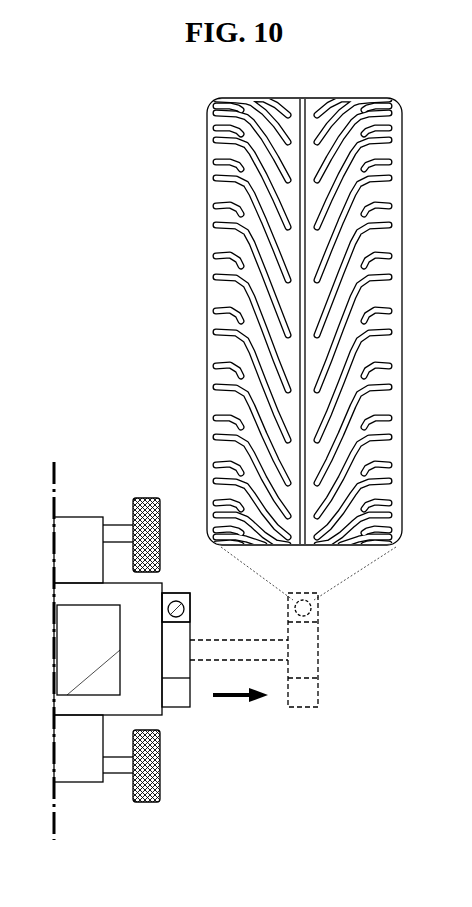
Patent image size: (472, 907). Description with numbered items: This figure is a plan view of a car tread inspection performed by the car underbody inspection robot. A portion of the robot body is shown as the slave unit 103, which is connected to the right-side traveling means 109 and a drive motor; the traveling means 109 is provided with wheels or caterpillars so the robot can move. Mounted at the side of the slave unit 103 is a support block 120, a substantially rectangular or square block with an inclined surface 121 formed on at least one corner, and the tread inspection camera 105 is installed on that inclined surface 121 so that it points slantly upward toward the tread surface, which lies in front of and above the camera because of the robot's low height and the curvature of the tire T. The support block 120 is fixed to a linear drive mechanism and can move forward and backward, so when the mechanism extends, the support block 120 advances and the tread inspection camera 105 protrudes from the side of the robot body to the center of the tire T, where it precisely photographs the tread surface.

The tire T is at (400, 495).
The slave unit 103 is at (176, 735).
The traveling means 109 is at (145, 477).
The support block 120 is at (192, 633).
The inclined surface 121 is at (191, 607).
The tread inspection camera 105 is at (178, 600).